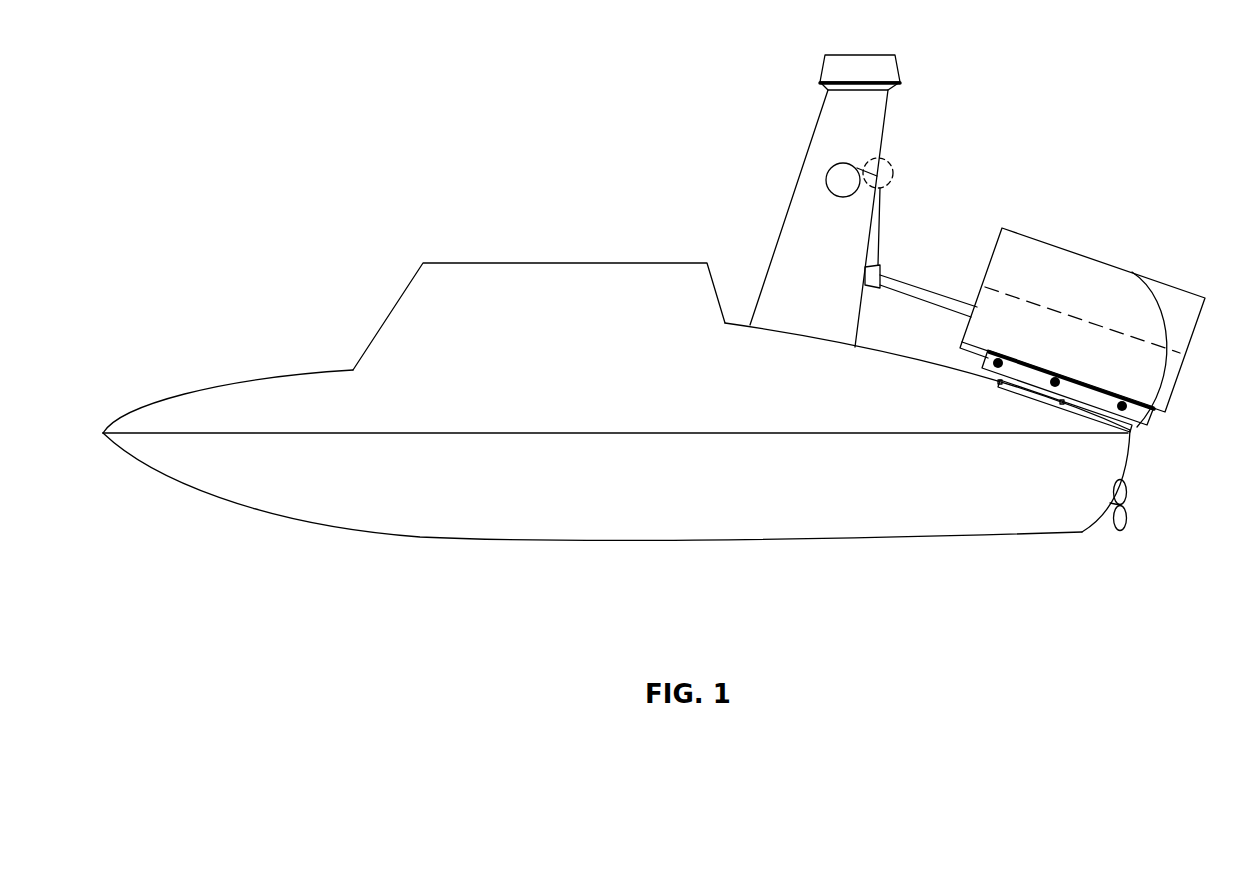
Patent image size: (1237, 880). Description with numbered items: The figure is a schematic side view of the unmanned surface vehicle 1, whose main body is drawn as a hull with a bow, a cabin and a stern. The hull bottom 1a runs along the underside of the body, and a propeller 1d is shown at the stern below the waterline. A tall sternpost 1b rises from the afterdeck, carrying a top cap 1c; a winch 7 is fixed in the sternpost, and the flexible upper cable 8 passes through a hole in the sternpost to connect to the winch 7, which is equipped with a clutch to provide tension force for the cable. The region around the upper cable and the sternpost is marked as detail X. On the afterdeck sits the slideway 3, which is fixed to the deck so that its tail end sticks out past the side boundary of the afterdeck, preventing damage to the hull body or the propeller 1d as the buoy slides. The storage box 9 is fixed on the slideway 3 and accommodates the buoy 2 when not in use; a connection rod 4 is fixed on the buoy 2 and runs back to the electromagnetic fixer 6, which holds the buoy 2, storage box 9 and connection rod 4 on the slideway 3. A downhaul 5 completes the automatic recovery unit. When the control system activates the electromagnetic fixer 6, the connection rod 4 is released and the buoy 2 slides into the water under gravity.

The unmanned surface vehicle 1 is at (305, 377).
The hull bottom 1a is at (327, 503).
The sternpost 1b is at (817, 223).
The mast top 1c is at (847, 67).
The propeller 1d is at (1128, 518).
The buoy 2 is at (1060, 333).
The slideway 3 is at (1097, 400).
The connection rod 4 is at (928, 297).
The downhaul 5 is at (1163, 363).
The electromagnetic fixer 6 is at (872, 278).
The winch 7 is at (843, 178).
The upper cable 8 is at (880, 232).
The storage box 9 is at (1097, 290).
The detail region X is at (893, 164).